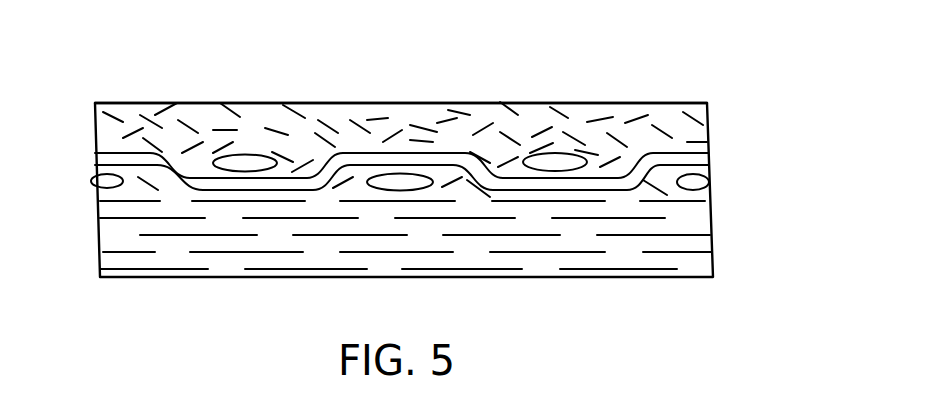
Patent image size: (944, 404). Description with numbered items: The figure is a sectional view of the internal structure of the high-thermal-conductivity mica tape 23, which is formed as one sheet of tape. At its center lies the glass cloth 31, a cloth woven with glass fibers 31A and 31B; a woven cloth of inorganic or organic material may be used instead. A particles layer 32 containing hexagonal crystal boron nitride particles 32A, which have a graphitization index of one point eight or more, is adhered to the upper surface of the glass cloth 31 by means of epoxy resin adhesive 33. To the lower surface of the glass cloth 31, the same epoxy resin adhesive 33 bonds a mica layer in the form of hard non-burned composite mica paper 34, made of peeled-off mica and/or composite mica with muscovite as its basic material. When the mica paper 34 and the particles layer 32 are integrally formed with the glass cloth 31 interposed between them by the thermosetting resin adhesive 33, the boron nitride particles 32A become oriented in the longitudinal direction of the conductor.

The high-thermal-conductivity mica tape 23 is at (447, 178).
The glass cloth 31 is at (437, 107).
The glass fiber 31A is at (245, 163).
The glass fiber 31B is at (393, 158).
The particles layer 32 is at (78, 102).
The hexagonal crystal boron nitride particles 32A is at (700, 140).
The epoxy resin adhesive 33 is at (107, 133).
The hard non-burned composite mica paper 34 is at (437, 240).